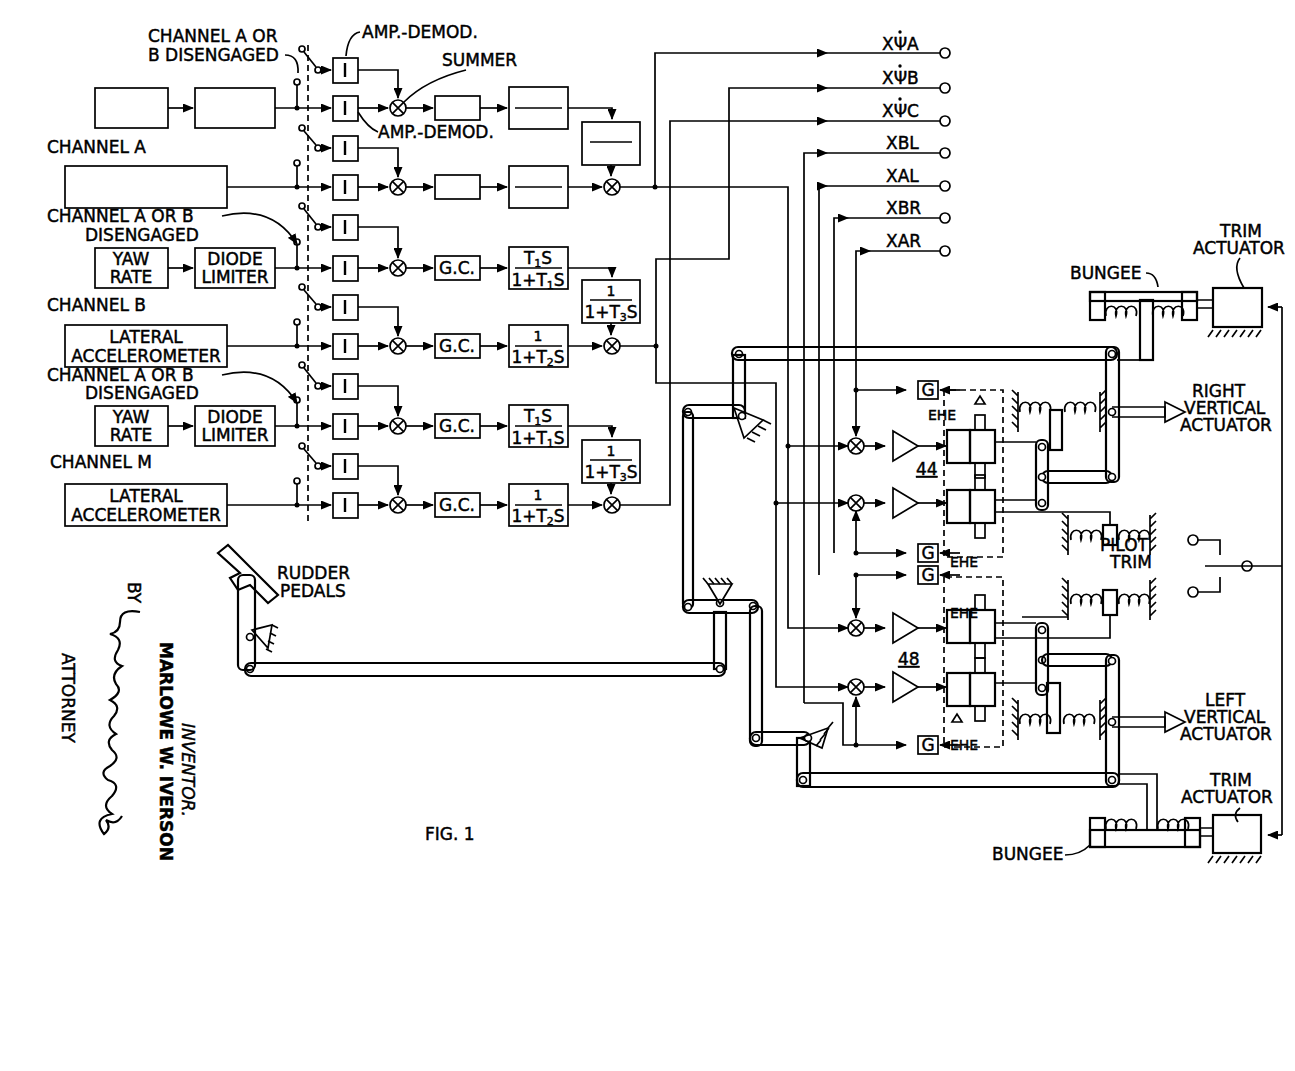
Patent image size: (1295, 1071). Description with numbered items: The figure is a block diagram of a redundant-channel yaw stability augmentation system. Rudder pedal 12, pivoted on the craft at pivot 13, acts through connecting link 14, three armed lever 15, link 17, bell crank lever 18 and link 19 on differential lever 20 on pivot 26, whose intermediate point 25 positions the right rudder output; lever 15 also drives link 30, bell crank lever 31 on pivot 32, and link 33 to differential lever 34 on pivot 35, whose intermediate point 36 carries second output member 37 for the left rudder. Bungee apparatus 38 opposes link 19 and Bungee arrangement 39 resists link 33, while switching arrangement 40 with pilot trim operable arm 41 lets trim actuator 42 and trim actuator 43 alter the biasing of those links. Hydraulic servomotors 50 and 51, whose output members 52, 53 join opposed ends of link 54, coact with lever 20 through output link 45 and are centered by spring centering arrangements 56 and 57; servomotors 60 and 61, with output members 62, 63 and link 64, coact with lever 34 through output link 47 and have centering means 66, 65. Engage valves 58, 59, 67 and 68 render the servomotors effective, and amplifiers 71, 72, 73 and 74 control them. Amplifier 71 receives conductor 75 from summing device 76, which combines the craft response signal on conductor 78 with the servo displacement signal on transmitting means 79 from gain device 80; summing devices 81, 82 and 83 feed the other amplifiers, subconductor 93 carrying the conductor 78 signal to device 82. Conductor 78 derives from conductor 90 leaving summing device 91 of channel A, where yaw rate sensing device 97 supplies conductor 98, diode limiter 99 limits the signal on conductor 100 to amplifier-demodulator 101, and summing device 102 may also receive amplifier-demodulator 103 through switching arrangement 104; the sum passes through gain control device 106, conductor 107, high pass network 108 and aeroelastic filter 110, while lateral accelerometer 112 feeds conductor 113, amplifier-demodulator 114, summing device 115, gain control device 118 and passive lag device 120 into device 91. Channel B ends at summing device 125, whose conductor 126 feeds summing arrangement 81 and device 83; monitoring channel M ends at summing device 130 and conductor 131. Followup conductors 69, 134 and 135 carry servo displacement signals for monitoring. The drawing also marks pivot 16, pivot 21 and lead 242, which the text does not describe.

The rudder pedal 12 is at (236, 548).
The pivot 13 is at (248, 637).
The connecting link 14 is at (462, 663).
The three armed lever 15 is at (704, 616).
The fixed pivot 16 is at (730, 585).
The link 17 is at (692, 502).
The bell crank lever 18 is at (732, 418).
The link 19 is at (960, 348).
The differential lever 20 is at (1121, 374).
The pivot 21 is at (1110, 350).
The intermediate point 25 is at (1122, 422).
The pivot 26 is at (1119, 472).
The link 30 is at (748, 692).
The bell crank lever 31 is at (772, 746).
The pivot 32 is at (807, 730).
The link 33 is at (904, 792).
The differential lever 34 is at (1105, 762).
The pivot 35 is at (1117, 661).
The intermediate point 36 is at (1119, 712).
The second output member 37 is at (1134, 730).
The Bungee apparatus 38 is at (1090, 296).
The Bungee arrangement 39 is at (1090, 826).
The switching arrangement 40 is at (1213, 545).
The pilot trim operable arm 41 is at (1224, 571).
The trim actuator 42 is at (1226, 288).
The trim actuator 43 is at (1212, 816).
The output link 45 is at (1092, 468).
The output link 47 is at (1102, 652).
The first hydraulic servomotor 50 is at (966, 472).
The second hydraulic servomotor 51 is at (986, 490).
The output member 52 is at (1040, 446).
The output member 53 is at (1021, 512).
The link 54 is at (1086, 487).
The internal spring centering arrangement 56 is at (1018, 412).
The internal spring centering arrangement 57 is at (1064, 540).
The engage valve 58 is at (1012, 402).
The engage valve 59 is at (990, 528).
The hydraulic servomotor 60 is at (976, 644).
The hydraulic servomotor 61 is at (975, 673).
The output member 62 is at (1061, 600).
The output member 63 is at (1022, 682).
The link 64 is at (1051, 690).
The centering means 65 is at (1048, 730).
The centering means 66 is at (1108, 590).
The engage valve 67 is at (987, 606).
The engage valve 68 is at (988, 738).
The servo displacement followup conductor 69 is at (873, 576).
The amplifier 71 is at (902, 440).
The amplifier 72 is at (908, 502).
The amplifier 73 is at (918, 620).
The amplifier 74 is at (908, 687).
The conductor 75 is at (876, 450).
The summing device 76 is at (860, 438).
The conductor 78 is at (846, 448).
The transmitting means 79 is at (902, 390).
The gain device 80 is at (930, 384).
The summing device 81 is at (858, 503).
The summing device 82 is at (854, 636).
The summing device 83 is at (852, 682).
The conductor 90 is at (774, 186).
The summing device 91 is at (607, 197).
The subconductor 93 is at (814, 623).
The yaw rate sensing device 97 is at (164, 127).
The conductor 98 is at (172, 104).
The diode limiter 99 is at (238, 127).
The conductor 100 is at (303, 95).
The amplifier-demodulator 101 is at (358, 96).
The summing device 102 is at (399, 100).
The second amplifier-demodulator 103 is at (358, 63).
The switching arrangement 104 is at (292, 72).
The gain control device 106 is at (441, 92).
The conductor 107 is at (481, 109).
The high pass network 108 is at (510, 88).
The aeroelastic filter 110 is at (582, 146).
The lateral accelerometer 112 is at (226, 166).
The conductor 113 is at (282, 189).
The amplifier-demodulator 114 is at (335, 172).
The summing device 115 is at (400, 198).
The gain control device 118 is at (441, 173).
The passive lag device 120 is at (525, 210).
The summing device 125 is at (608, 356).
The conductor 126 is at (638, 352).
The summing device 130 is at (606, 515).
The conductor 131 is at (640, 510).
The servo followup conductor 134 is at (867, 745).
The followup conductor 135 is at (900, 552).
The output lead 242 is at (639, 198).